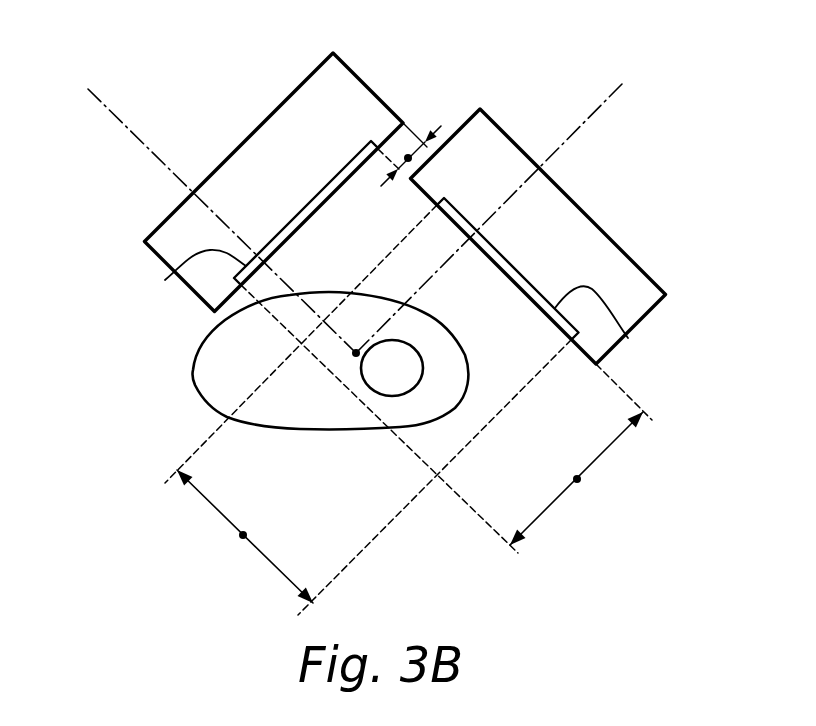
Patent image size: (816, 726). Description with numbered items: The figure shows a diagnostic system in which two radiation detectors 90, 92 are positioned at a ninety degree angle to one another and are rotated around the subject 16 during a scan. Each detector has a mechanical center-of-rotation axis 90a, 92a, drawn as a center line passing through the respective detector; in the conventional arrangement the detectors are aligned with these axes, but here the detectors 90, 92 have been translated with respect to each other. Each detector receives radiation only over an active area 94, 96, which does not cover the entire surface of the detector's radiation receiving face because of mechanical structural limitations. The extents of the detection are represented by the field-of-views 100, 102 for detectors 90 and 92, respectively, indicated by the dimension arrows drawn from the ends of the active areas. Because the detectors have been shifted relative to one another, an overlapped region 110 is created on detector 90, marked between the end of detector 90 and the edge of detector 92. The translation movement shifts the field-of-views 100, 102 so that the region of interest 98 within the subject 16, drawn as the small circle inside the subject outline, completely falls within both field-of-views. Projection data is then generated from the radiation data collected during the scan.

The subject 16 is at (213, 377).
The radiation detector 90 is at (307, 102).
The mechanical center-of-rotation axis 90a is at (133, 133).
The radiation detector 92 is at (573, 248).
The mechanical center-of-rotation axis 92a is at (573, 137).
The active area 94 is at (165, 280).
The active area 96 is at (628, 338).
The region of interest 98 is at (407, 375).
The field-of-view 100 is at (577, 479).
The field-of-view 102 is at (243, 535).
The overlapped region 110 is at (408, 158).